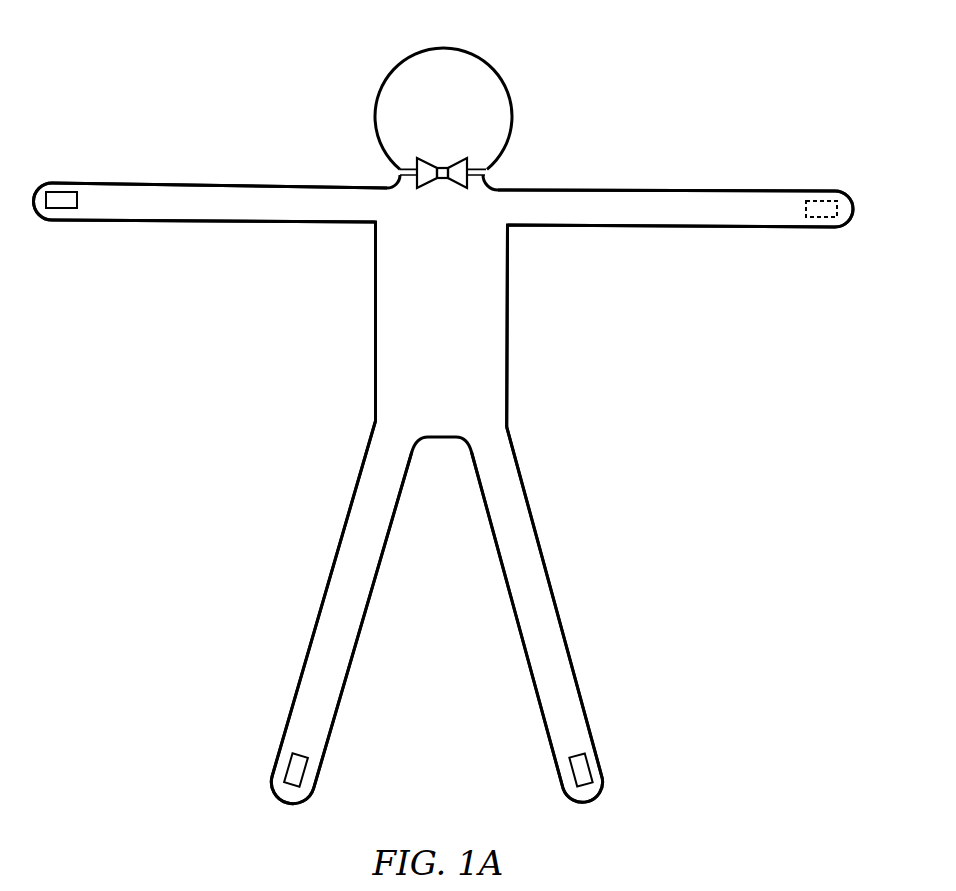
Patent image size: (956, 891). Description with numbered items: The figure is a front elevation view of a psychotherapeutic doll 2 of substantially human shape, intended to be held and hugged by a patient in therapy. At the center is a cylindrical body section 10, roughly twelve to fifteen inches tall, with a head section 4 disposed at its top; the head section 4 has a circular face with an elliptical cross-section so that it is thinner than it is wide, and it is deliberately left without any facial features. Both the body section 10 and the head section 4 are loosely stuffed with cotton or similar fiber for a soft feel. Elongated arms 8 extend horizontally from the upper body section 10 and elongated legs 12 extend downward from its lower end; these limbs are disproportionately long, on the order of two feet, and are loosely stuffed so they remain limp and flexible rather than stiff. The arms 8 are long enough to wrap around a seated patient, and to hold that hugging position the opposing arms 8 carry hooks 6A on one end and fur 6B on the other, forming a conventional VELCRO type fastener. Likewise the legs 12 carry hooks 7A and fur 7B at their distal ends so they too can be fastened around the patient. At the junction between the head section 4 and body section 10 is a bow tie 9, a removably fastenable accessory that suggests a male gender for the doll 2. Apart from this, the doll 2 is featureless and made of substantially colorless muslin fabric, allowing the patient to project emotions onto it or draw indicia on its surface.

The doll 2 is at (512, 52).
The head section 4 is at (512, 116).
The hooks 6A is at (65, 192).
The fur 6B is at (815, 201).
The hooks 7A is at (290, 768).
The fur 7B is at (590, 770).
The arms 8 is at (218, 188).
The bow tie 9 is at (428, 158).
The body section 10 is at (509, 316).
The legs 12 is at (353, 657).